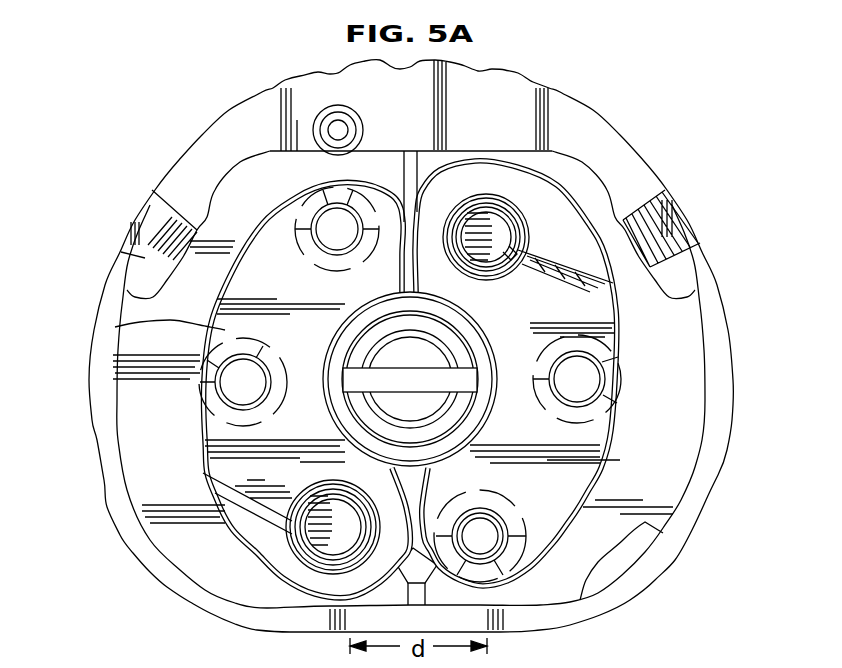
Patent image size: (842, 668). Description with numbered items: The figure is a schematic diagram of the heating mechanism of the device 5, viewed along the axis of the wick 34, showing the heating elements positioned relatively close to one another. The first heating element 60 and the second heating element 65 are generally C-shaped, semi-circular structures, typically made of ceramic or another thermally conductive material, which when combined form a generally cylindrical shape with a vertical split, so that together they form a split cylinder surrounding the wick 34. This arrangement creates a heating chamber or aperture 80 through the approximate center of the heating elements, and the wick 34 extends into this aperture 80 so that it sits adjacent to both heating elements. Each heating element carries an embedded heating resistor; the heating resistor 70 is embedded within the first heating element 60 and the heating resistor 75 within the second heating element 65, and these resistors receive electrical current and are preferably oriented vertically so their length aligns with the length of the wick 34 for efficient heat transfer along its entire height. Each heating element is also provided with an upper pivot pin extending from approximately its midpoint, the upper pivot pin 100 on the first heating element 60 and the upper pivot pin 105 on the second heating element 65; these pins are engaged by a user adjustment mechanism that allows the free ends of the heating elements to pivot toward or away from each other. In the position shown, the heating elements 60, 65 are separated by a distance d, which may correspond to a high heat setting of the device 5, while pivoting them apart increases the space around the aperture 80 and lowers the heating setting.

The device 5 is at (104, 77).
The wick 34 is at (440, 357).
The first heating element 60 is at (620, 347).
The second heating element 65 is at (115, 327).
The heating resistor 70 is at (620, 310).
The heating resistor 75 is at (217, 480).
The heating chamber or aperture 80 is at (410, 277).
The upper pivot pin 100 is at (582, 380).
The upper pivot pin 105 is at (240, 390).